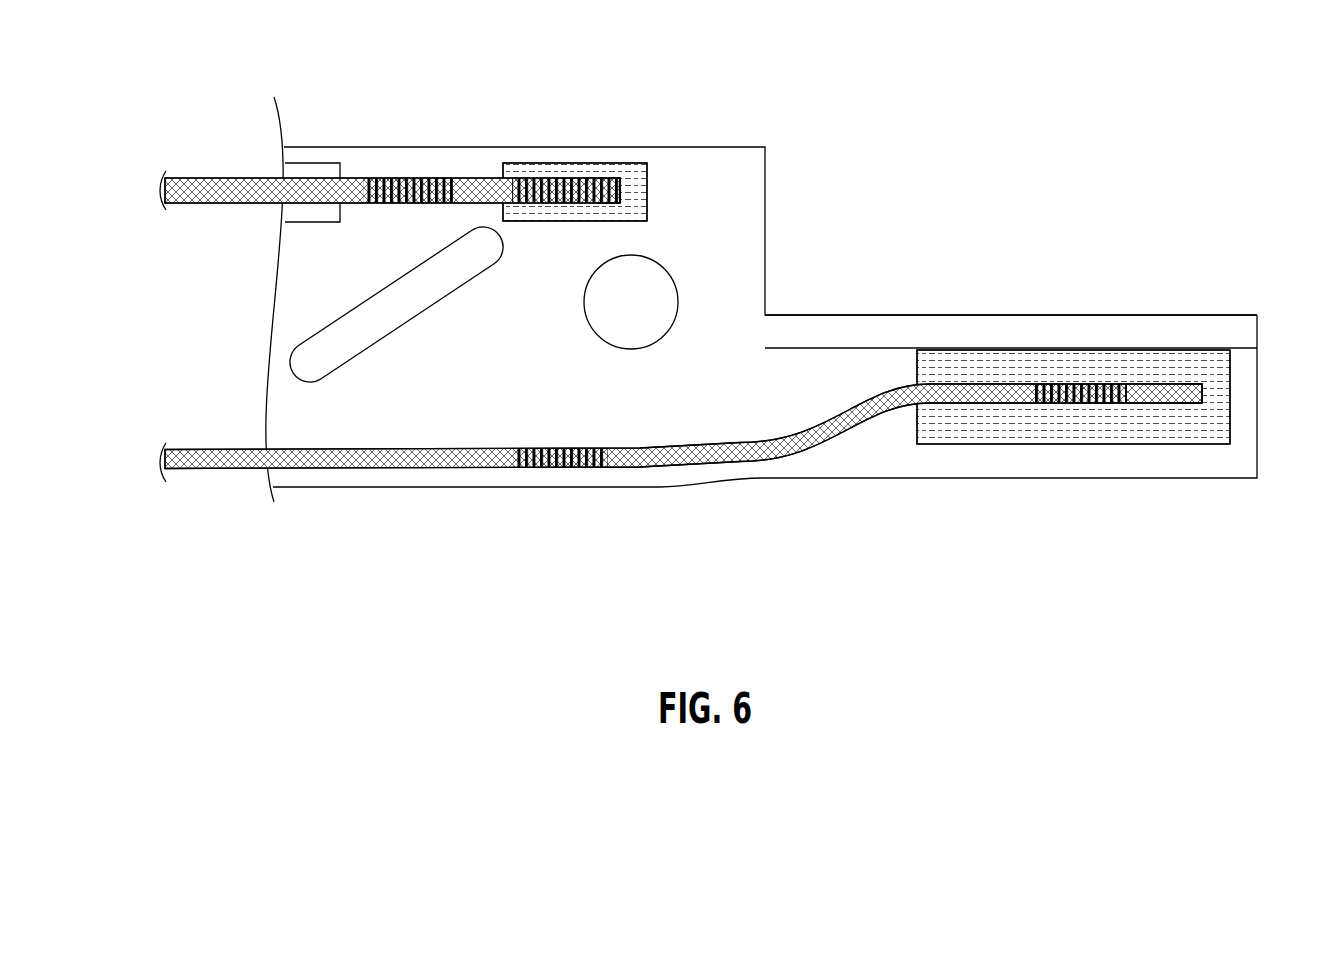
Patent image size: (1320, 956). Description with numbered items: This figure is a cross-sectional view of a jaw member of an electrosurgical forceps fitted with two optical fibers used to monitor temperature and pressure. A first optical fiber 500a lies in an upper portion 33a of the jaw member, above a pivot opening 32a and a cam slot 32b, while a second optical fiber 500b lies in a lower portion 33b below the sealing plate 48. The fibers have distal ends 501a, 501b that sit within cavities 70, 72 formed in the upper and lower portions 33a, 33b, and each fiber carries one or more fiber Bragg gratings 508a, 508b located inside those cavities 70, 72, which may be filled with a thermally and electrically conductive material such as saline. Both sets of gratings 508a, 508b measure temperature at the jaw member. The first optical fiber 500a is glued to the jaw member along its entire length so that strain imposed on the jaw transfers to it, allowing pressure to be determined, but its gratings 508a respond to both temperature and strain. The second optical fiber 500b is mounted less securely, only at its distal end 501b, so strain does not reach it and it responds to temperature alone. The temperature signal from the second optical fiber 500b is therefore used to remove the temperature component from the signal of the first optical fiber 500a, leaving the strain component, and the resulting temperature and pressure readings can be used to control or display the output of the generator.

The first optical fiber 500a is at (220, 180).
The second optical fiber 500b is at (222, 457).
The fiber Bragg gratings 508a is at (557, 185).
The fiber Bragg gratings 508b is at (557, 465).
The distal end 501a is at (611, 190).
The distal end 501b is at (1183, 390).
The cavity 70 is at (633, 178).
The cavity 72 is at (1193, 424).
The upper portion 33a is at (740, 186).
The lower portion 33b is at (992, 462).
The pivot opening 32a is at (645, 298).
The cam slot 32b is at (378, 327).
The sealing plate 48 is at (977, 315).